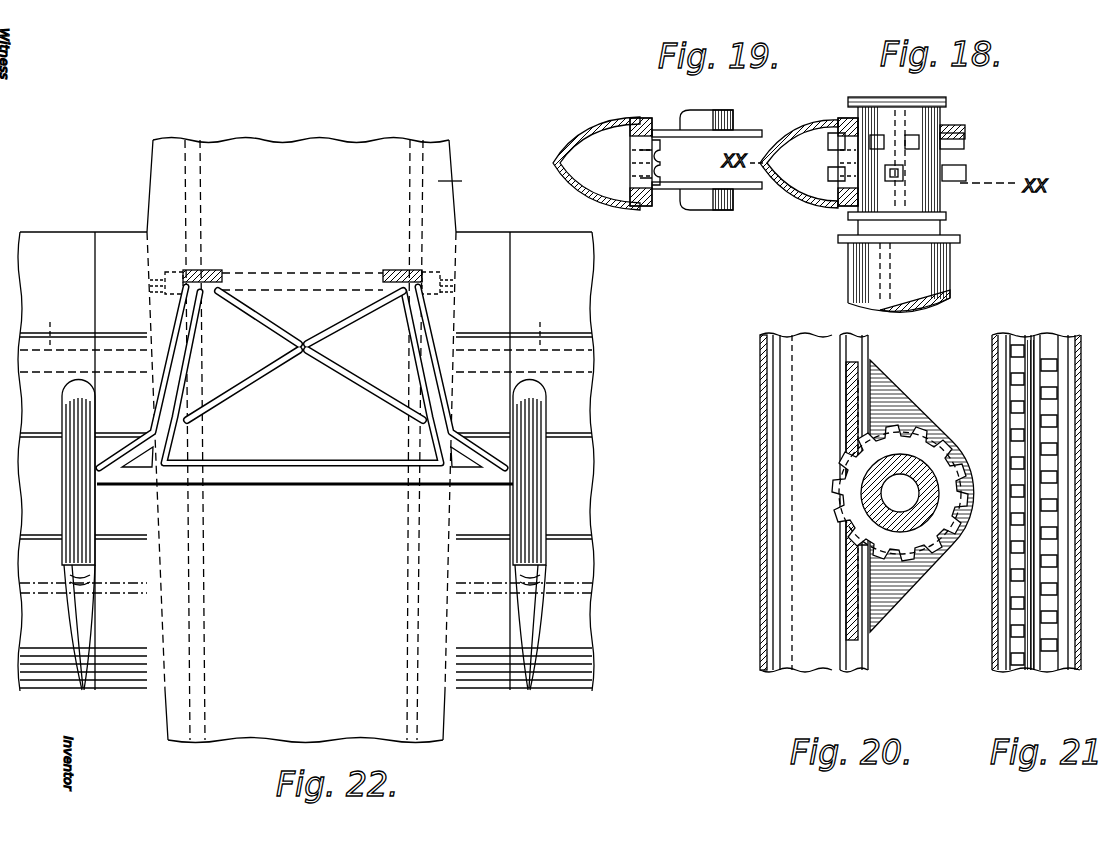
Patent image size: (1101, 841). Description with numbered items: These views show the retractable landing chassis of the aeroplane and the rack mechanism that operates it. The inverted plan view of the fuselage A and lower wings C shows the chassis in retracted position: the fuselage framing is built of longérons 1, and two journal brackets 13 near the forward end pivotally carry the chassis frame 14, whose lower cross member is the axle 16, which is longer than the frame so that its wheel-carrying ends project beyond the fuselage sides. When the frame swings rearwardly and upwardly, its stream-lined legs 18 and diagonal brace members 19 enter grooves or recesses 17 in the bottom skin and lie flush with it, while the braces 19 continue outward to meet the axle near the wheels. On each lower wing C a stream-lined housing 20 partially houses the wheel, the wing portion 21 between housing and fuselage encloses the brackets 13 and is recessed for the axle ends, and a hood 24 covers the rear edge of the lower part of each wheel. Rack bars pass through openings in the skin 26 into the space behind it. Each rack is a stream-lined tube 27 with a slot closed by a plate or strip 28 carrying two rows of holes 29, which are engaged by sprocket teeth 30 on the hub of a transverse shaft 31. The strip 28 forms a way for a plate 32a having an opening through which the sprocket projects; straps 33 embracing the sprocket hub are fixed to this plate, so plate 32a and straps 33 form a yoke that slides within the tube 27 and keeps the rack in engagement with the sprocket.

In FIG. 22, the longéron 1 is at (196, 197).
In FIG. 22, the fuselage A is at (459, 183).
In FIG. 22, the lower wing C is at (591, 563).
In FIG. 22, the journal bracket 13 is at (165, 268).
In FIG. 22, the chassis frame 14 is at (333, 368).
In FIG. 22, the axle 16 is at (322, 473).
In FIG. 22, the grooves or recesses 17 is at (192, 325).
In FIG. 22, the legs 18 is at (176, 353).
In FIG. 22, the diagonal brace members 19 is at (272, 328).
In FIG. 22, the housing 20 is at (62, 465).
In FIG. 22, the wing portion 21 is at (305, 504).
In FIG. 22, the hood 24 is at (72, 617).
In FIG. 22, the skin 26 is at (460, 718).
In FIG. 19, the tube 27 is at (590, 136).
In FIG. 18, the tube 27 is at (815, 133).
In FIG. 20, the tube 27 is at (762, 442).
In FIG. 21, the tube 27 is at (992, 428).
In FIG. 19, the plate or strip 28 is at (630, 148).
In FIG. 18, the plate or strip 28 is at (840, 150).
In FIG. 20, the plate or strip 28 is at (848, 565).
In FIG. 19, the holes 29 is at (628, 175).
In FIG. 20, the holes 29 is at (855, 443).
In FIG. 21, the holes 29 is at (1047, 388).
In FIG. 18, the sprocket teeth 30 is at (962, 175).
In FIG. 20, the sprocket teeth 30 is at (910, 550).
In FIG. 18, the transverse shaft 31 is at (945, 275).
In FIG. 20, the transverse shaft 31 is at (917, 517).
In FIG. 19, the plate 32a is at (641, 207).
In FIG. 18, the plate 32a is at (840, 203).
In FIG. 20, the plate 32a is at (847, 410).
In FIG. 19, the straps 33 is at (696, 131).
In FIG. 20, the straps 33 is at (903, 417).